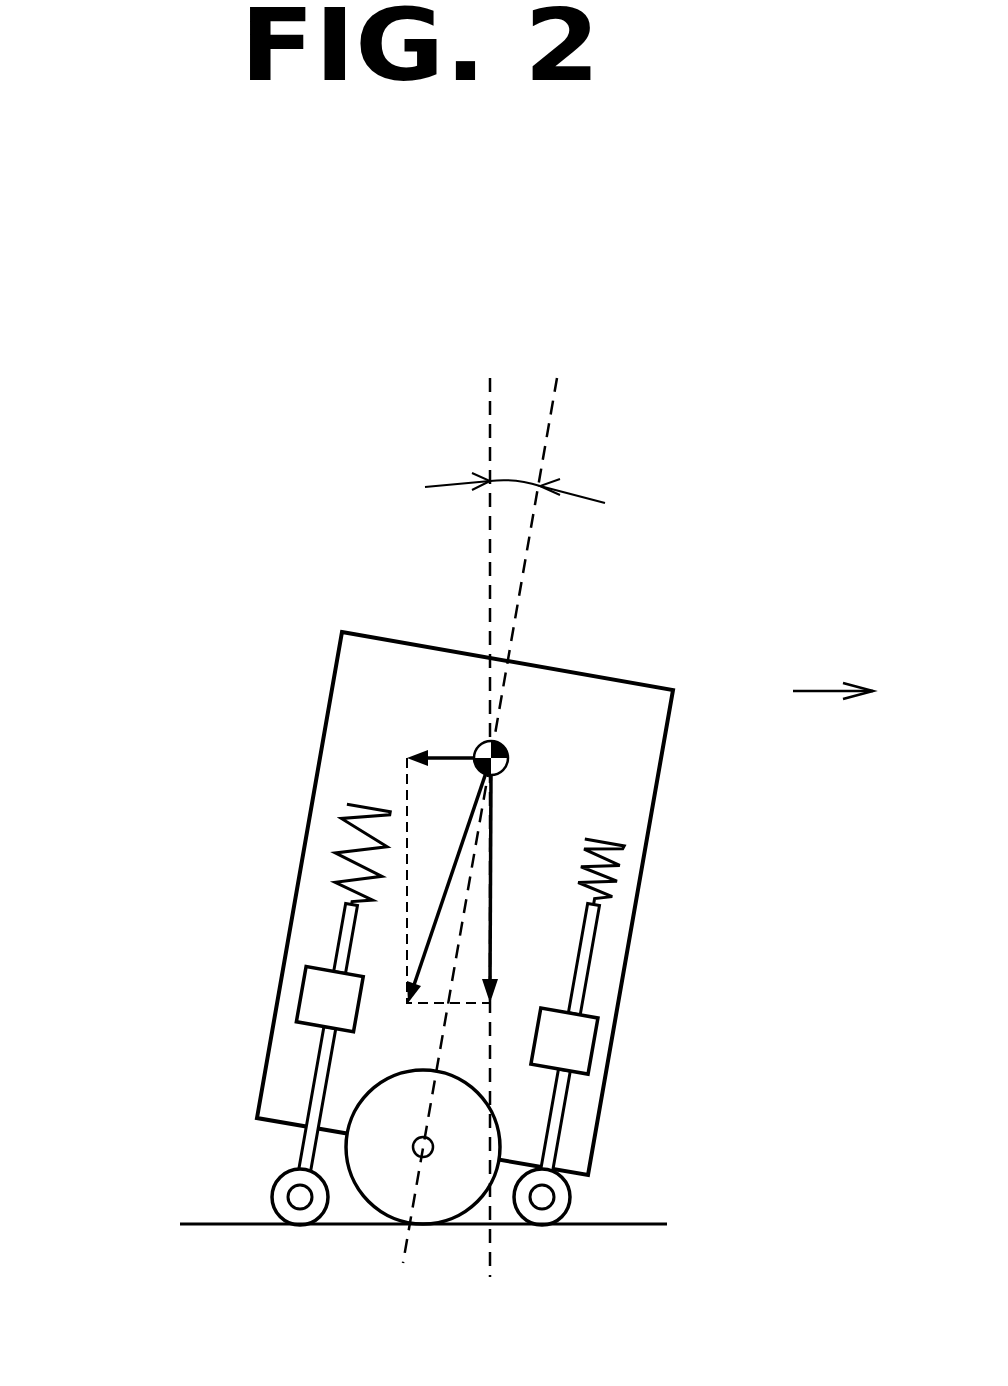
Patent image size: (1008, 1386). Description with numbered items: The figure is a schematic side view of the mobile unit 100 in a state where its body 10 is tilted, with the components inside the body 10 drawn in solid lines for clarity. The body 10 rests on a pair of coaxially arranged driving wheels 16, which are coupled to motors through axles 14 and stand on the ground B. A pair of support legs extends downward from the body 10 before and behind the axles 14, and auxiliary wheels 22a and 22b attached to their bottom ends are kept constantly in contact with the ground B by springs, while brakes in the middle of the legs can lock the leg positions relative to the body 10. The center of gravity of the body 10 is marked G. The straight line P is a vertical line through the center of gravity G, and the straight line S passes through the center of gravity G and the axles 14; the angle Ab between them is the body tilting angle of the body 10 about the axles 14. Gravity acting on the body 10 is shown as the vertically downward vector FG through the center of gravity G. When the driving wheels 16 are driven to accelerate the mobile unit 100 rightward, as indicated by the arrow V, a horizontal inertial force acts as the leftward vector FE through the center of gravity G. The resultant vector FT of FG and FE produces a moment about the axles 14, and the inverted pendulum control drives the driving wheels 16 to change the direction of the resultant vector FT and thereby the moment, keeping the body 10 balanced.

The mobile unit 100 is at (122, 432).
The body 10 is at (385, 637).
The axles 14 is at (410, 1148).
The driving wheels 16 is at (460, 1183).
The auxiliary wheel 22a is at (567, 1192).
The auxiliary wheel 22b is at (283, 1192).
The ground B is at (627, 1222).
The center of gravity G is at (500, 745).
The vertical line P is at (490, 804).
The straight line S is at (485, 797).
The body tilting angle Ab is at (517, 478).
The arrow V is at (818, 690).
The inertial force vector FE is at (457, 758).
The gravitational force vector FG is at (500, 822).
The resultant vector FT is at (467, 825).